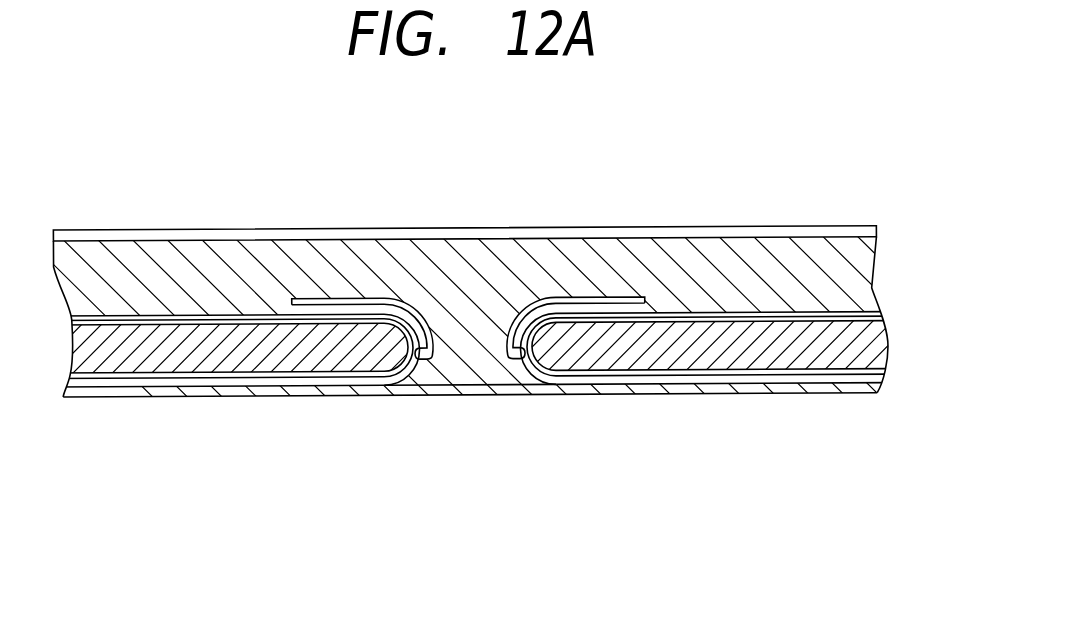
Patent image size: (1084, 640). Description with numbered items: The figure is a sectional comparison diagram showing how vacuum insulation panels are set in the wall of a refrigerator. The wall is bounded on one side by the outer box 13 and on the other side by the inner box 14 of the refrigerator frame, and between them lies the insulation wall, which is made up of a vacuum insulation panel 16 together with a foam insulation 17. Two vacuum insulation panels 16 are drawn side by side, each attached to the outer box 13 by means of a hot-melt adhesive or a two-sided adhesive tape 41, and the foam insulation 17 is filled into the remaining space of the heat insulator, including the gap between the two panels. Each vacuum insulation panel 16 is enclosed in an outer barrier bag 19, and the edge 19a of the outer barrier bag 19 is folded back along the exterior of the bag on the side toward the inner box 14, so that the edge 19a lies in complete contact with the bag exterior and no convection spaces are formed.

The outer box 13 is at (480, 397).
The inner box 14 is at (794, 232).
The vacuum insulation panel 16 is at (110, 357).
The foam insulation 17 is at (458, 270).
The outer barrier bag 19 is at (182, 314).
The edge of the outer barrier bag 19a is at (320, 300).
The two-sided adhesive tape 41 is at (238, 386).